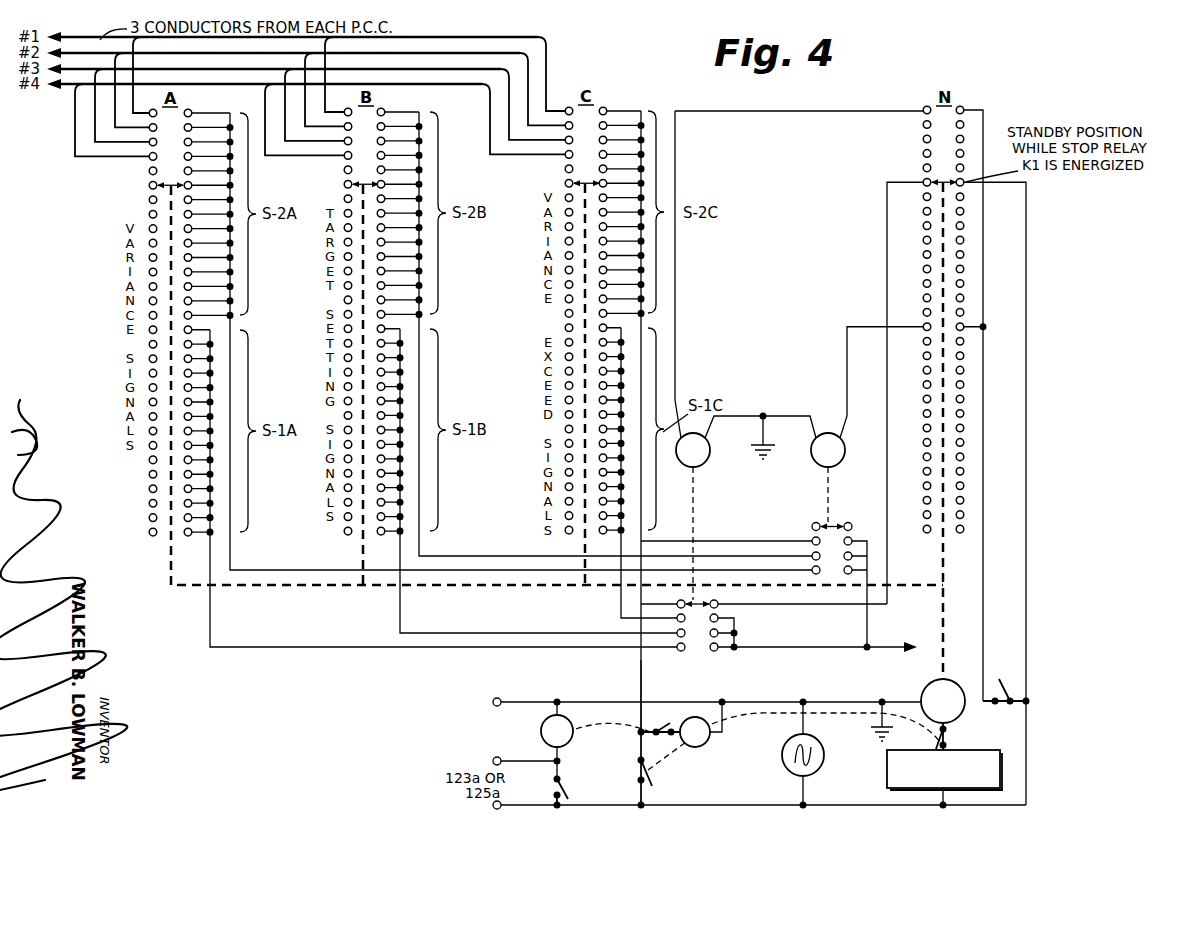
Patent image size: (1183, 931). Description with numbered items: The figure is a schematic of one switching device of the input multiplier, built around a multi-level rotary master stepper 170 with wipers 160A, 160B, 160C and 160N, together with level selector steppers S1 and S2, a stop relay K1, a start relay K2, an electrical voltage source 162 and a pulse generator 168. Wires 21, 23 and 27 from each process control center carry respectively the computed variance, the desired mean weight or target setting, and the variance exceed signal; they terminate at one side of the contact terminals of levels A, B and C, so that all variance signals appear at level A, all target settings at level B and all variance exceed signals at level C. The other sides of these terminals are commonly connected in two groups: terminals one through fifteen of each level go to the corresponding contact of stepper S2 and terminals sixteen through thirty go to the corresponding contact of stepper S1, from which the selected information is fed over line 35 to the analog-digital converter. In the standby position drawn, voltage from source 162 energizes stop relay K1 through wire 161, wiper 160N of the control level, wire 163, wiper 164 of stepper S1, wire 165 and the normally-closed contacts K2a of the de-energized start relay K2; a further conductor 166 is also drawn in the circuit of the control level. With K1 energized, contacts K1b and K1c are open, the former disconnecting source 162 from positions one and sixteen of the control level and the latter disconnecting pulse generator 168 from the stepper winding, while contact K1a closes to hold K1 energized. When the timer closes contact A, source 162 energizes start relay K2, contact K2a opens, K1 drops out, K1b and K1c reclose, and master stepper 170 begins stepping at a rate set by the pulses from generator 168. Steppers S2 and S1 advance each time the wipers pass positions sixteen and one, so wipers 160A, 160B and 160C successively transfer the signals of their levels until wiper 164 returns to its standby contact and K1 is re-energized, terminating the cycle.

The conductor 21 is at (75, 118).
The conductor 23 is at (265, 106).
The line 27 is at (490, 106).
The line 35 is at (888, 645).
The wiper of level A 160A is at (166, 188).
The wiper of level B 160B is at (358, 184).
The wiper of level C 160C is at (578, 184).
The wiper of level N 160N is at (940, 180).
The wire 161 is at (1026, 478).
The electrical voltage source 162 is at (783, 763).
The wire 163 is at (887, 494).
The wiper of stepper S-1 164 is at (706, 603).
The wire 165 is at (641, 673).
The conductor 166 is at (983, 445).
The pulse generator 168 is at (887, 776).
The master stepper 170 is at (950, 678).
The level selector stepper S-1 S1 is at (693, 450).
The level selector stepper S-2 S2 is at (828, 450).
The stop relay K1 is at (703, 723).
The start relay K2 is at (557, 739).
The normally-opened contacts K1a is at (630, 769).
The normally-closed contacts K1b is at (1006, 682).
The normally-closed contacts K1c is at (950, 743).
The normally-closed contacts K2a is at (672, 749).
The contact A is at (563, 777).